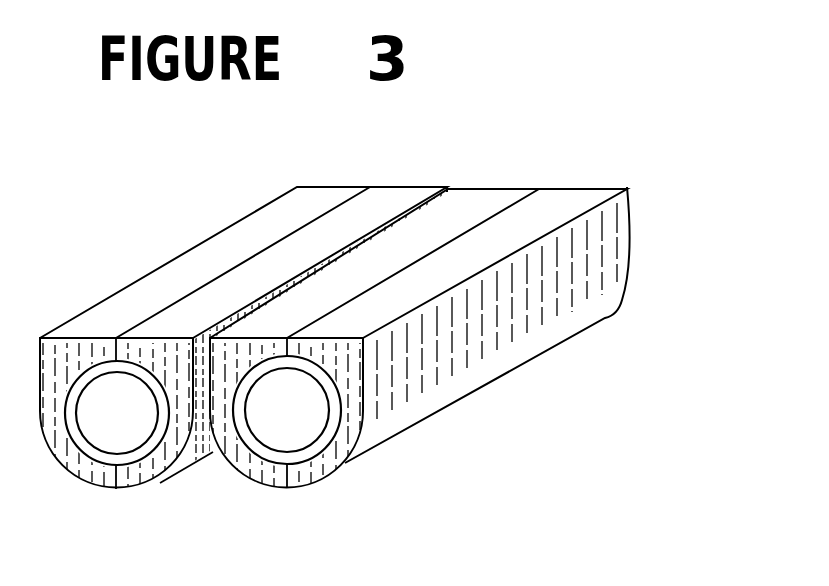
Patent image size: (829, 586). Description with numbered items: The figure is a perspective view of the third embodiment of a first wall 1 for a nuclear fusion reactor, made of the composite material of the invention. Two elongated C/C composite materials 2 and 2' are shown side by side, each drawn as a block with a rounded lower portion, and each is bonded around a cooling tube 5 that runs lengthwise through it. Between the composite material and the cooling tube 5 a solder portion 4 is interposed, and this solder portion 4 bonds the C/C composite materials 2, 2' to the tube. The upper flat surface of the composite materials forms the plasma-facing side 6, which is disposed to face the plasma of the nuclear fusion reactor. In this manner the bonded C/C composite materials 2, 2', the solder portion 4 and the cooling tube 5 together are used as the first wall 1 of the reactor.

The heat exchanger assembly 1 is at (372, 336).
The C/C composite material 2 is at (420, 336).
The C/C composite material 2' is at (243, 368).
The solder portion 4 is at (317, 457).
The cooling tube 5 is at (272, 455).
The plasma-facing side 6 is at (487, 208).